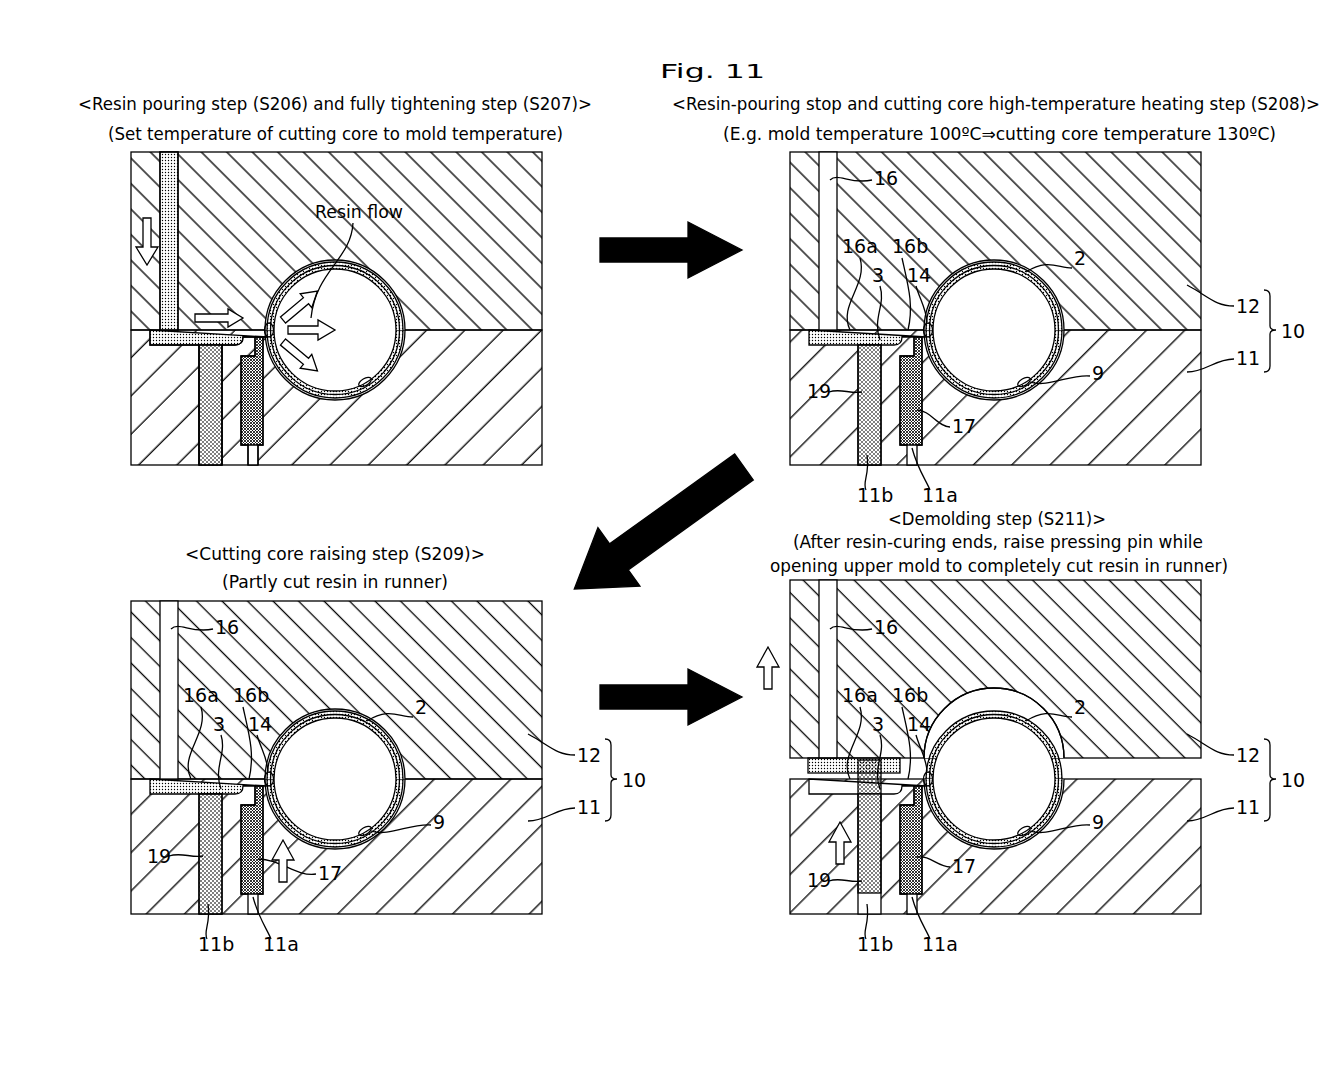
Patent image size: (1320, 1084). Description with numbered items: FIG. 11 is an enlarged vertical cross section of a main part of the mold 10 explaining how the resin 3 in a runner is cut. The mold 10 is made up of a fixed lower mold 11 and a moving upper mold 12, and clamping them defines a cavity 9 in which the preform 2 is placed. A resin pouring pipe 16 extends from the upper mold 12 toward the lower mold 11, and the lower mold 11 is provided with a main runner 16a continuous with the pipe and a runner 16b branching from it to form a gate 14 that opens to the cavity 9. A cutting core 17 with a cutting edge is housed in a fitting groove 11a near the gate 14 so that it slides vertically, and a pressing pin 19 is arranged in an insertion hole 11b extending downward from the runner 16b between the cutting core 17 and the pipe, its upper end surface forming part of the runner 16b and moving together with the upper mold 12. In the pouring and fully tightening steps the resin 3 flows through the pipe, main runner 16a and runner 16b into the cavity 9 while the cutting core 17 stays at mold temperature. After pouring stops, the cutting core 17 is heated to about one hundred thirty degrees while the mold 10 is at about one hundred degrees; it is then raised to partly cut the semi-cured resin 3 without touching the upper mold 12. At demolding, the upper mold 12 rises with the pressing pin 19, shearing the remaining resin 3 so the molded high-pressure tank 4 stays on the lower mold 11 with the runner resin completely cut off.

The preform 2 is at (347, 322).
The resin 3 is at (209, 304).
The high-pressure tank 4 is at (994, 700).
The cavity 9 is at (401, 375).
The mold 10 is at (388, 308).
The lower mold 11 is at (366, 397).
The fitting groove 11a is at (273, 475).
The insertion hole 11b is at (216, 425).
The upper mold 12 is at (366, 241).
The gate 14 is at (261, 300).
The resin pouring pipe 16 is at (199, 241).
The main runner 16a is at (184, 290).
The runner 16b is at (245, 290).
The cutting core 17 is at (278, 391).
The pressing pin 19 is at (184, 405).